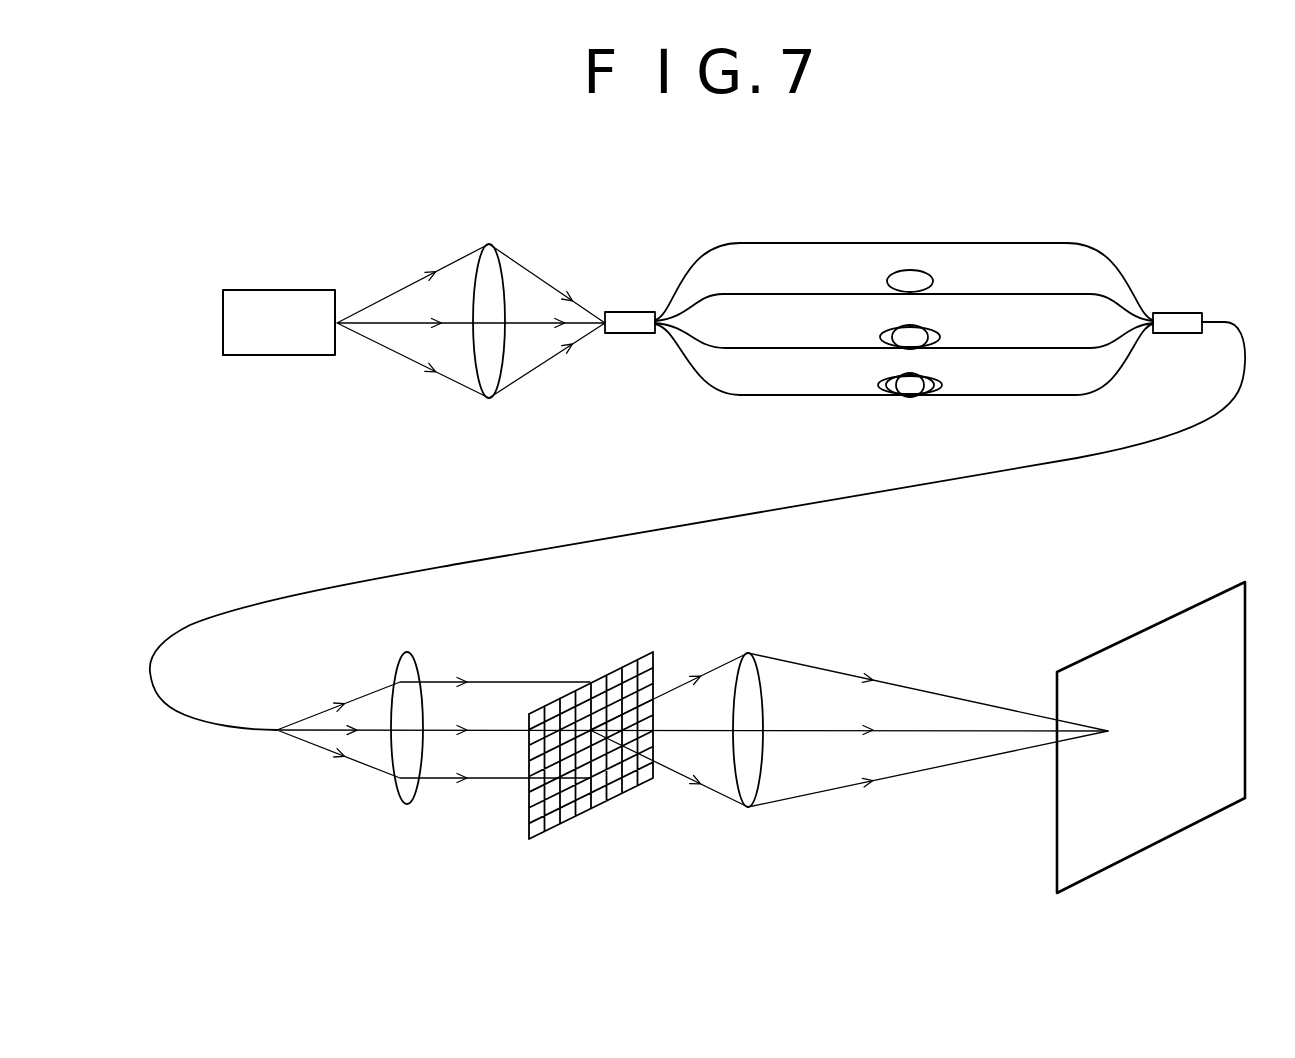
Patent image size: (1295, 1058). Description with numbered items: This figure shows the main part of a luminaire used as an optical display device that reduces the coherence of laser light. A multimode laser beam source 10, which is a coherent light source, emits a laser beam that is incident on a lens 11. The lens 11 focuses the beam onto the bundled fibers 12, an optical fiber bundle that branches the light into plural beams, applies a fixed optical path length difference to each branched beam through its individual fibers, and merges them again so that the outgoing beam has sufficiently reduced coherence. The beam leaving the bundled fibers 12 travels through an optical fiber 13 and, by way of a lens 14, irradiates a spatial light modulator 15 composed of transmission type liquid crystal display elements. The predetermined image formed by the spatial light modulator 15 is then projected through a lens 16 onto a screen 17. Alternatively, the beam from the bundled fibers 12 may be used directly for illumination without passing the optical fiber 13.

The multimode laser beam source 10 is at (283, 300).
The lens 11 is at (492, 262).
The bundled fibers 12 is at (1127, 212).
The optical fiber 13 is at (918, 490).
The lens 14 is at (410, 794).
The spatial light modulator 15 is at (587, 800).
The lens 16 is at (755, 792).
The screen 17 is at (1153, 836).